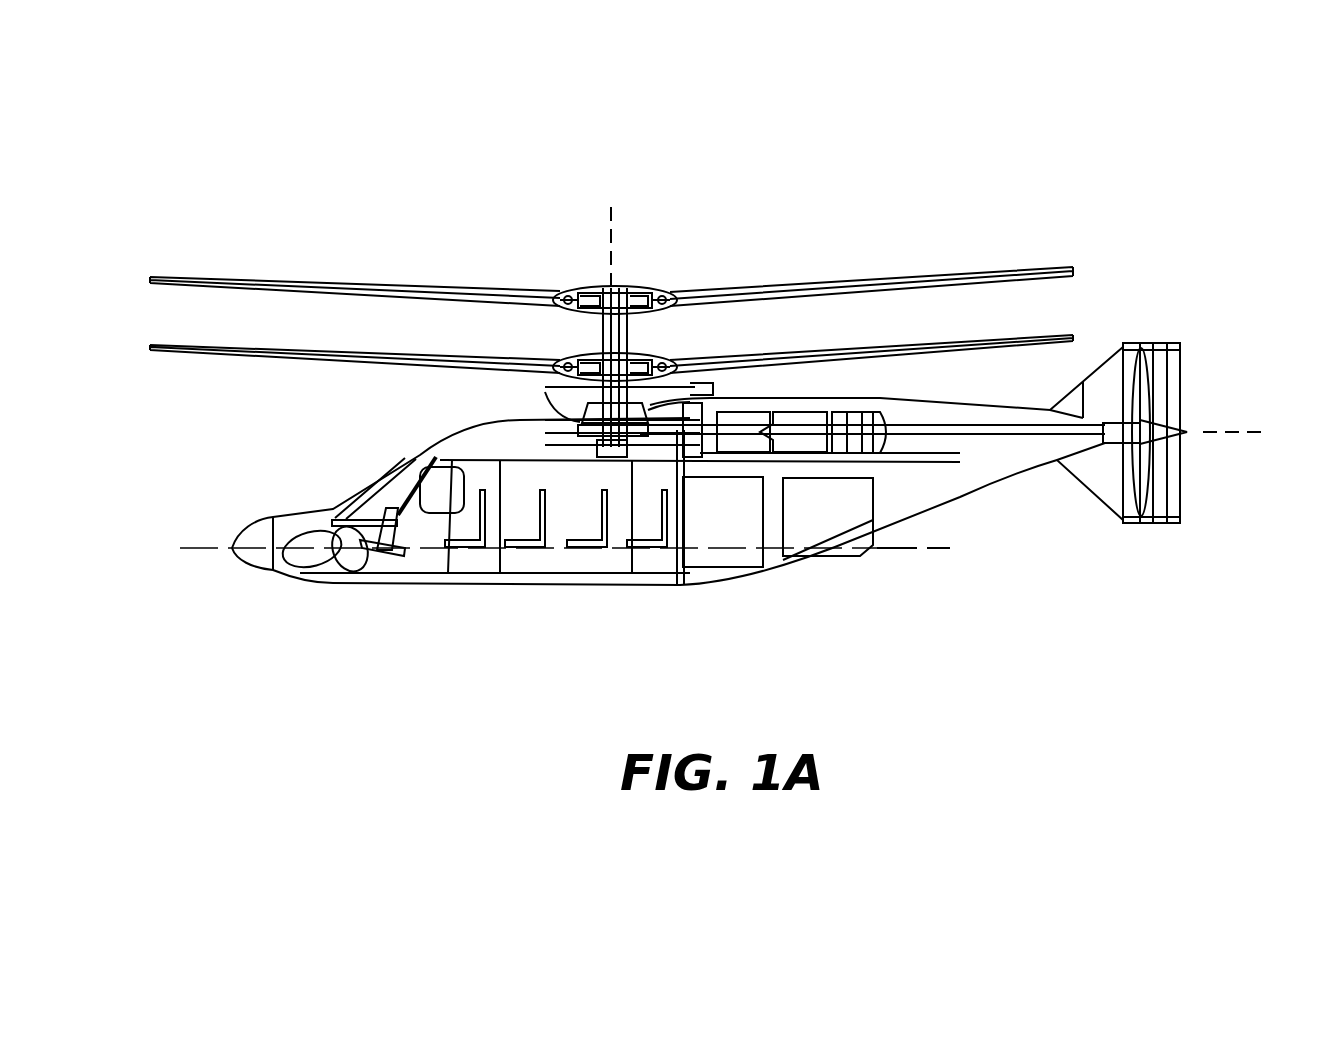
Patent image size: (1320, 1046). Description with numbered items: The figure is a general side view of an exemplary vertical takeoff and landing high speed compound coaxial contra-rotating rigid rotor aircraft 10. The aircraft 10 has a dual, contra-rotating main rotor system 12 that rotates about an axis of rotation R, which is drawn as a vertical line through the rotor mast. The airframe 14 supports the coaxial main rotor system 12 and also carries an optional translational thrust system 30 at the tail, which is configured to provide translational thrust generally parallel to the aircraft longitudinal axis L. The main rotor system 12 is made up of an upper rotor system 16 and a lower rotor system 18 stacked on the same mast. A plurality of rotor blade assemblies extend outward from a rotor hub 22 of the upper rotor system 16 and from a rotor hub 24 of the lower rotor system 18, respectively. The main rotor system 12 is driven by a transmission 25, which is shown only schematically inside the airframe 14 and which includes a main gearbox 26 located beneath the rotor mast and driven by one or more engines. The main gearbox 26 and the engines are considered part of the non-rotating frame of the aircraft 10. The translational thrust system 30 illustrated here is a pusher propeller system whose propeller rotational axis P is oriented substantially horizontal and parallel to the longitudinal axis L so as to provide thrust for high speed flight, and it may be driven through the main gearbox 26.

The rotary wing aircraft 10 is at (872, 170).
The main rotor system 12 is at (674, 281).
The airframe 14 is at (447, 447).
The upper rotor system 16 is at (584, 281).
The lower rotor system 18 is at (652, 356).
The rotor hub 22 is at (637, 290).
The rotor hub 24 is at (585, 356).
The transmission 25 is at (702, 410).
The main gearbox 26 is at (585, 412).
The translational thrust system 30 is at (1194, 357).
The axis of rotation R is at (611, 207).
The propeller rotational axis P is at (1227, 434).
The aircraft longitudinal axis L is at (907, 549).